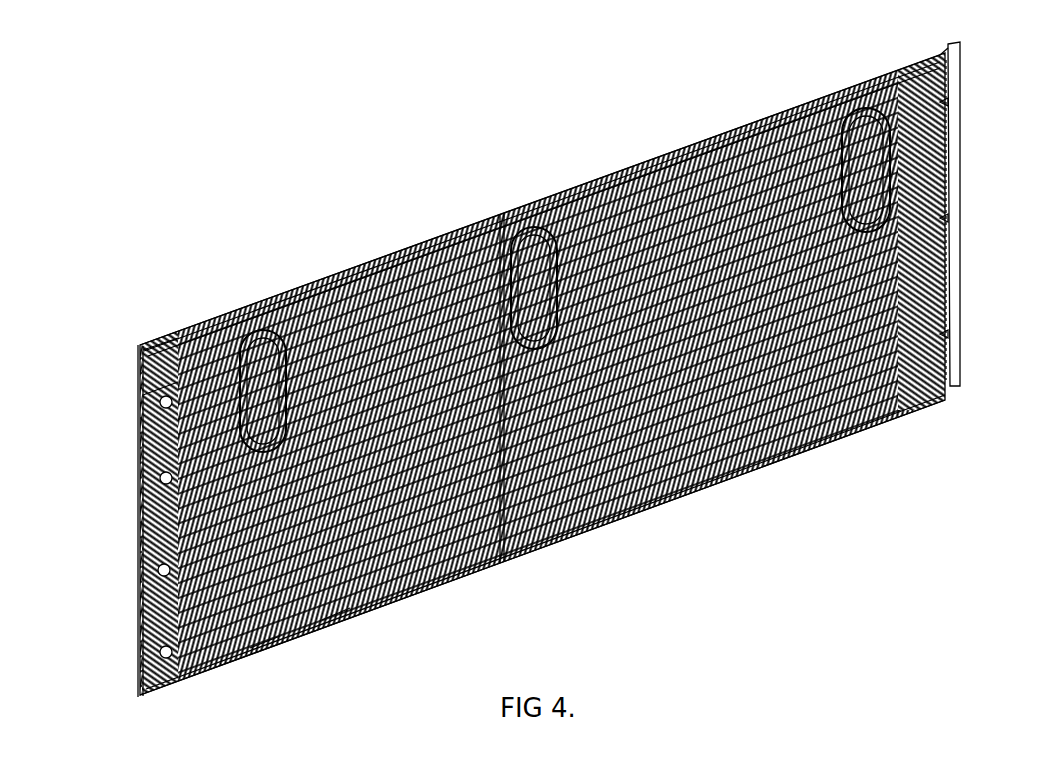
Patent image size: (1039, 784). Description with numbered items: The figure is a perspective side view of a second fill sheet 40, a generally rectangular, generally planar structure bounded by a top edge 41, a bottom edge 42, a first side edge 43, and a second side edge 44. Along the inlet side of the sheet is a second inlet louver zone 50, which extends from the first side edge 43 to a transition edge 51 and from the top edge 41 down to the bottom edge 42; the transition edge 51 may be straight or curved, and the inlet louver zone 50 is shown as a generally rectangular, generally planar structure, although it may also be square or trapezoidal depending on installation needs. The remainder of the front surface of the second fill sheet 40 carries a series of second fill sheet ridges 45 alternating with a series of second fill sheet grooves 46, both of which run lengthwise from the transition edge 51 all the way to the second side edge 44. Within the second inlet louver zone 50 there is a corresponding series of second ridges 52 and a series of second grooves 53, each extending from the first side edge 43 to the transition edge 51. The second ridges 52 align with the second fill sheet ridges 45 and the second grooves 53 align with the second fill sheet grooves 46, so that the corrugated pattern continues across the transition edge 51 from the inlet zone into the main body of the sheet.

The second fill sheet 40 is at (322, 262).
The top edge 41 is at (530, 200).
The bottom edge 42 is at (568, 535).
The first side edge 43 is at (140, 510).
The second side edge 44 is at (960, 178).
The second fill sheet ridges 45 is at (262, 642).
The second fill sheet grooves 46 is at (335, 614).
The second inlet louver zone 50 is at (140, 424).
The transition edge 51 is at (143, 378).
The second ridges 52 is at (145, 614).
The second grooves 53 is at (155, 627).